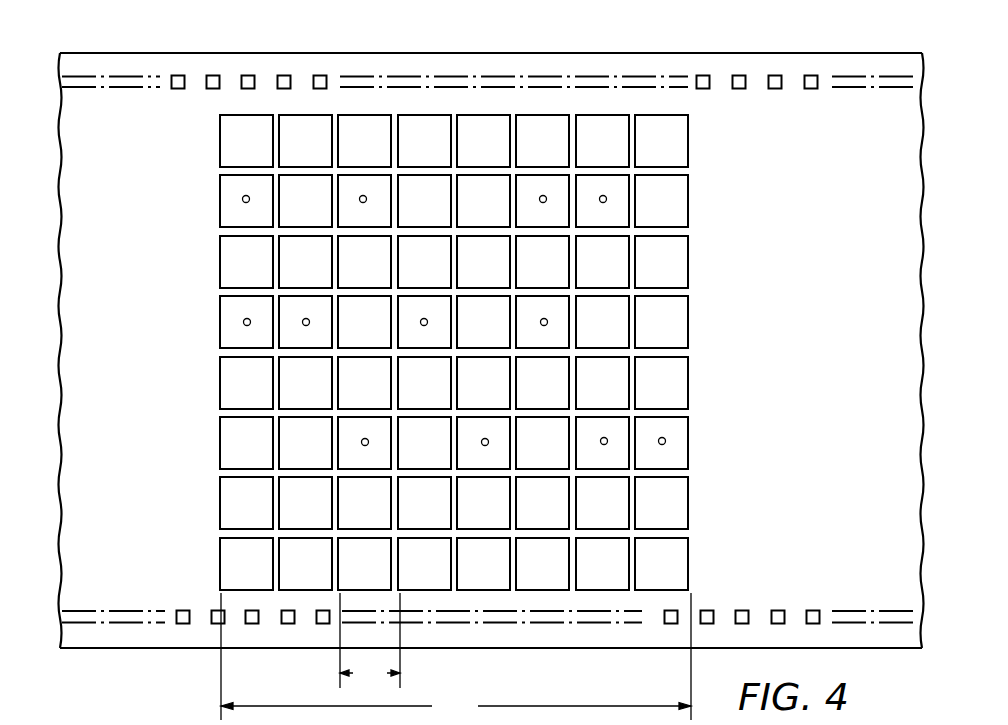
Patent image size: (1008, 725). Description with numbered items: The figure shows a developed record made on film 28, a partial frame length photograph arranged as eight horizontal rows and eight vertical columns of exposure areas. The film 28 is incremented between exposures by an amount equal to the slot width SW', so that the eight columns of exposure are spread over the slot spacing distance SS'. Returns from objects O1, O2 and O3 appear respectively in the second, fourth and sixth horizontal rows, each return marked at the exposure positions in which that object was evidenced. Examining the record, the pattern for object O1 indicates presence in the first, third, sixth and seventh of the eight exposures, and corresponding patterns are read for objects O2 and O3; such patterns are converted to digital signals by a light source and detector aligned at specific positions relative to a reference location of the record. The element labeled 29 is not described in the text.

The film 28 is at (282, 67).
The frame area / image frames 29 is at (455, 420).
The object O1 is at (603, 199).
The object O2 is at (544, 322).
The object O3 is at (662, 441).